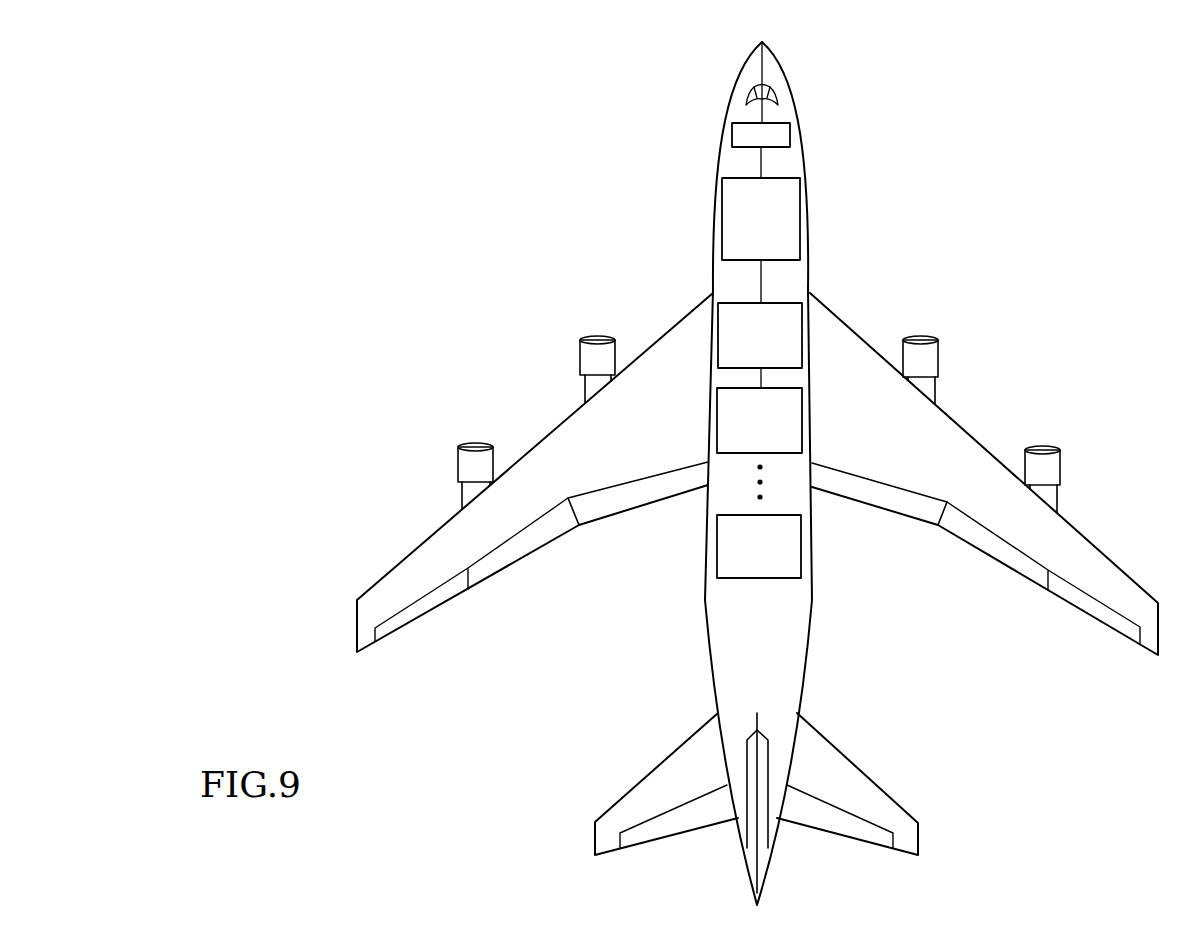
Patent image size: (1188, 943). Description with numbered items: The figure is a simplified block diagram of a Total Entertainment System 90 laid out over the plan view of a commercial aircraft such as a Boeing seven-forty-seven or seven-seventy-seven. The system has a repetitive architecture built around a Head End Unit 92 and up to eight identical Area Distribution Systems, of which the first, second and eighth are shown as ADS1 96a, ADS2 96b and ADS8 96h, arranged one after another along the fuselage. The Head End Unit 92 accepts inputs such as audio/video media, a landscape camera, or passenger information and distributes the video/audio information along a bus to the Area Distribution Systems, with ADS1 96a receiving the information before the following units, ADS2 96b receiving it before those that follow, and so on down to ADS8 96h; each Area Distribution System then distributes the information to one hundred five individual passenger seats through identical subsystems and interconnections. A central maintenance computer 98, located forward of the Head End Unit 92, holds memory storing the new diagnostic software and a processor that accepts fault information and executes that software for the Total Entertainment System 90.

The Total Entertainment System 90 is at (583, 65).
The Head End Unit 92 is at (722, 220).
The Area Distribution System ADS1 96a is at (802, 338).
The Area Distribution System ADS2 96b is at (717, 420).
The Area Distribution System ADS8 96h is at (801, 548).
The central maintenance computer 98 is at (790, 132).